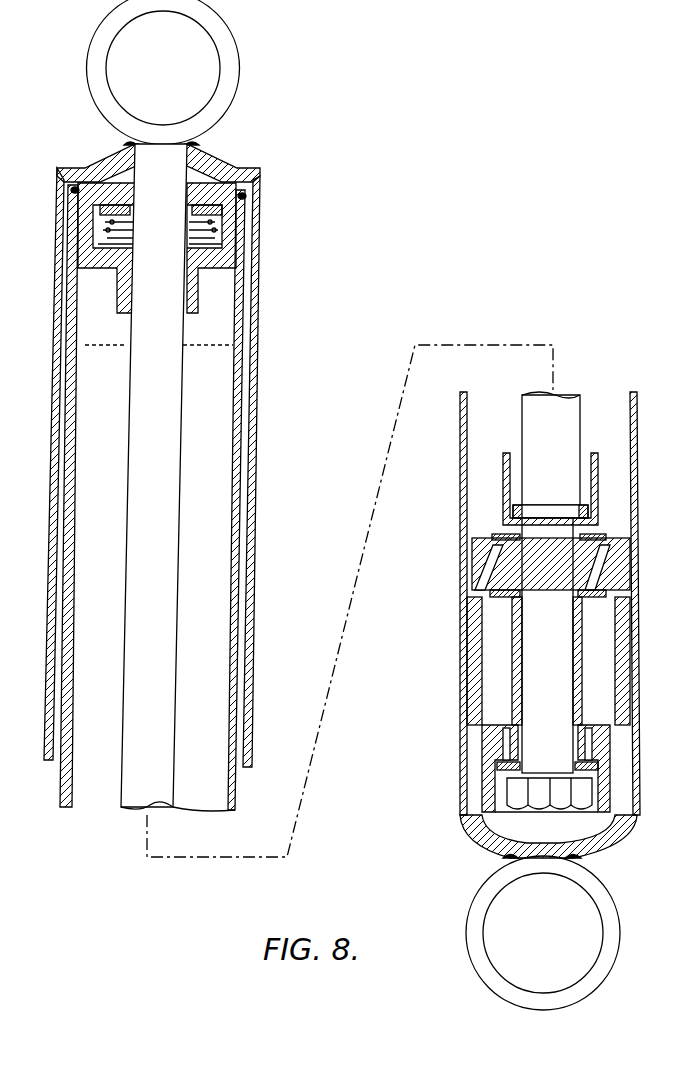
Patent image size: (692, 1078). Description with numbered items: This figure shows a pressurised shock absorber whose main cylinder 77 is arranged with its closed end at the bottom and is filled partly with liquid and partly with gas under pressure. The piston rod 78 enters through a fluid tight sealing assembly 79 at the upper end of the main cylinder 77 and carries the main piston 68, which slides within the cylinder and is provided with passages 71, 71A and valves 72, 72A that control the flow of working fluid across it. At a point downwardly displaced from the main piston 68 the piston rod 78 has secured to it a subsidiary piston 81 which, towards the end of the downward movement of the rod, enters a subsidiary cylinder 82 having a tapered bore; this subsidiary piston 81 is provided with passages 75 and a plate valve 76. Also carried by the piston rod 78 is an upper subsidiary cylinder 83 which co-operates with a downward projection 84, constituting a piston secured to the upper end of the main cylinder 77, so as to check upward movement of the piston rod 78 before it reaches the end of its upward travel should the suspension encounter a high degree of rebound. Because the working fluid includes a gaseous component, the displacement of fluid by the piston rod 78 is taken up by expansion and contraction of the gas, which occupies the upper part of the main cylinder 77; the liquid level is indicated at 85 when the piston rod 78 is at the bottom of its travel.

The main piston 68 is at (612, 583).
The passage 71 is at (544, 561).
The passage 71A is at (483, 567).
The valve 72 is at (592, 598).
The valve 72A is at (495, 535).
The passages 75 is at (503, 743).
The plate valve 76 is at (497, 764).
The main cylinder 77 is at (636, 464).
The piston rod 78 is at (143, 463).
The sealing assembly 79 is at (97, 258).
The subsidiary piston 81 is at (597, 749).
The subsidiary cylinder 82 is at (470, 665).
The upper subsidiary cylinder 83 is at (592, 492).
The downward projection 84 is at (192, 302).
The liquid level 85 is at (85, 345).